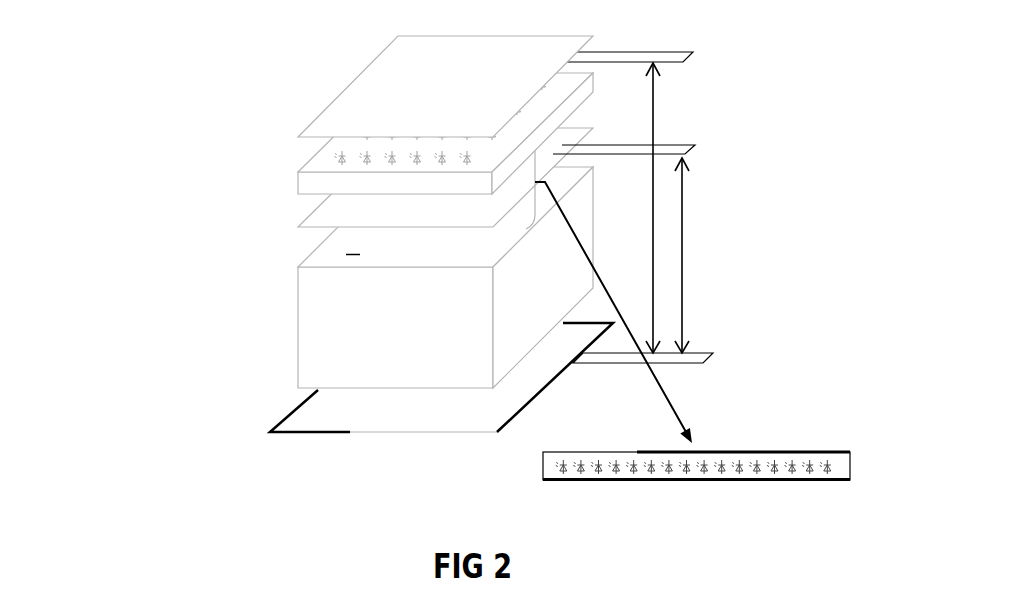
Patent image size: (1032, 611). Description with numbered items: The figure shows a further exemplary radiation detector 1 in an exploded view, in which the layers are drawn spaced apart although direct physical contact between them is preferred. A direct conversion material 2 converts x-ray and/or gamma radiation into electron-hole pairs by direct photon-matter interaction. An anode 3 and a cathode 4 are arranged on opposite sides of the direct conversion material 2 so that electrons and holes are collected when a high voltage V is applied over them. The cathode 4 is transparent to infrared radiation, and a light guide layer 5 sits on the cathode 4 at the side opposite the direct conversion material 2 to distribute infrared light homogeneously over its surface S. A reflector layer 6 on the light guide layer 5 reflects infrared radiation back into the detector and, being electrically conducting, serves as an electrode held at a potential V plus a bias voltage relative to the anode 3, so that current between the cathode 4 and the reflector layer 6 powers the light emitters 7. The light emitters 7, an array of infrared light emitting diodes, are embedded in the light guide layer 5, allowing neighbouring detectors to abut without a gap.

The radiation detector 1 is at (131, 54).
The direct conversion material 2 is at (297, 308).
The anode 3 is at (278, 423).
The cathode 4 is at (305, 217).
The light guide layer 5 is at (297, 176).
The reflector layer 6 is at (320, 117).
The light emitter 7 is at (316, 158).